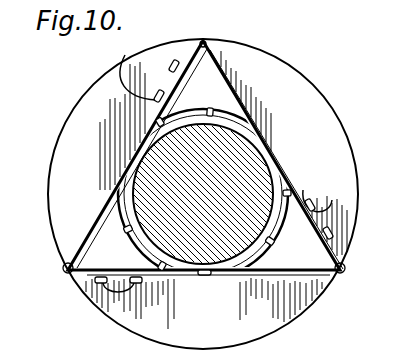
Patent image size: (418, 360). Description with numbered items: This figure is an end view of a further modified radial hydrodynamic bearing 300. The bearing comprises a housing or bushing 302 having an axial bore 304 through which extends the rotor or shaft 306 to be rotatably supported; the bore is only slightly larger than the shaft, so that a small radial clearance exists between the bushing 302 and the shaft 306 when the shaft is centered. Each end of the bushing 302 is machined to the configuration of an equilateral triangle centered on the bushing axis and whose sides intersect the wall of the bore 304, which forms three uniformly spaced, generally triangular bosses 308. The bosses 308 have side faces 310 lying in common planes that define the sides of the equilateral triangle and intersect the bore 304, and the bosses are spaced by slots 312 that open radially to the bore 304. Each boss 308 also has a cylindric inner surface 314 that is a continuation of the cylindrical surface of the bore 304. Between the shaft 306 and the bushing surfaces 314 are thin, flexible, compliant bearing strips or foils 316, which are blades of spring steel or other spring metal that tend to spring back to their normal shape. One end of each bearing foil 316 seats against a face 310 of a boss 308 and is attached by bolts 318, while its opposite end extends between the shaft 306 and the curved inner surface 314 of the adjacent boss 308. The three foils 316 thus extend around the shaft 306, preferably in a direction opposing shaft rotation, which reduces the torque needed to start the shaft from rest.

The radial hydrodynamic bearing 300 is at (222, 194).
The housing or bushing 302 is at (336, 137).
The axial bore 304 is at (203, 276).
The rotor or shaft 306 is at (152, 161).
The triangular bosses 308 is at (221, 67).
The side faces 310 is at (204, 43).
The slots 312 is at (285, 152).
The cylindric inner surfaces 314 is at (222, 146).
The bearing strips or foils 316 is at (175, 68).
The bolts 318 is at (172, 64).